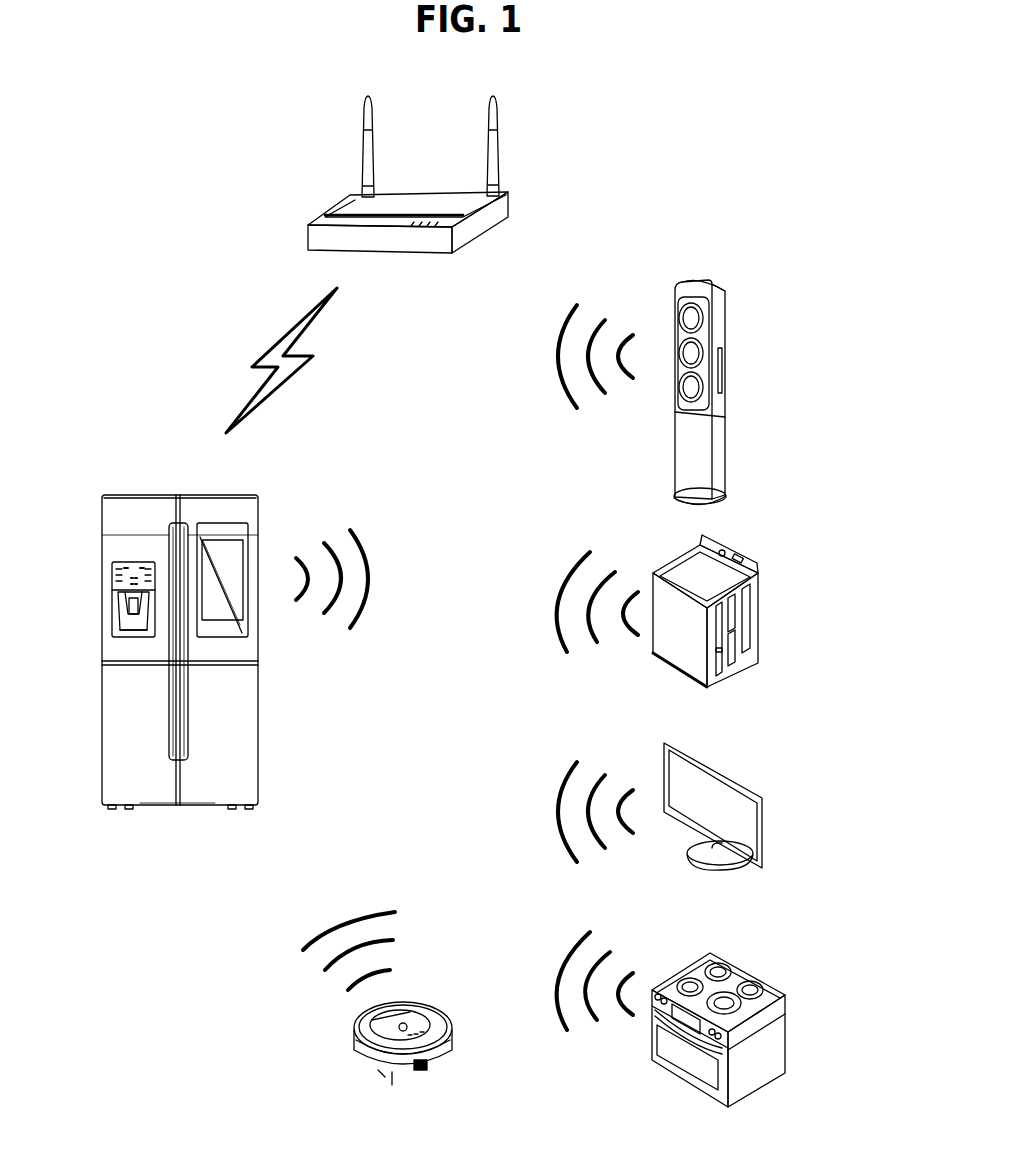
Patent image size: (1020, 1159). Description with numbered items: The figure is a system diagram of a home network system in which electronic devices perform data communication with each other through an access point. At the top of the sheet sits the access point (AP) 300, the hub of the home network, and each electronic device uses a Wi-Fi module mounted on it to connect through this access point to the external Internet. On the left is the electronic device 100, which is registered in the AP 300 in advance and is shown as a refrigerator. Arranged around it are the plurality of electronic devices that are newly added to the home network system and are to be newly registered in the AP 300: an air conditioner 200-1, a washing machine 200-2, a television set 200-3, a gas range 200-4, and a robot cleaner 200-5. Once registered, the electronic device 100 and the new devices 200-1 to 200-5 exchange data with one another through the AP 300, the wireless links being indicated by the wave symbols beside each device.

The electronic device 100 is at (133, 503).
The access point (AP) 300 is at (423, 197).
The air conditioner 200-1 is at (717, 325).
The washing machine 200-2 is at (748, 602).
The television set (TV) 200-3 is at (750, 815).
The gas range 200-4 is at (772, 993).
The robot cleaner 200-5 is at (436, 1062).